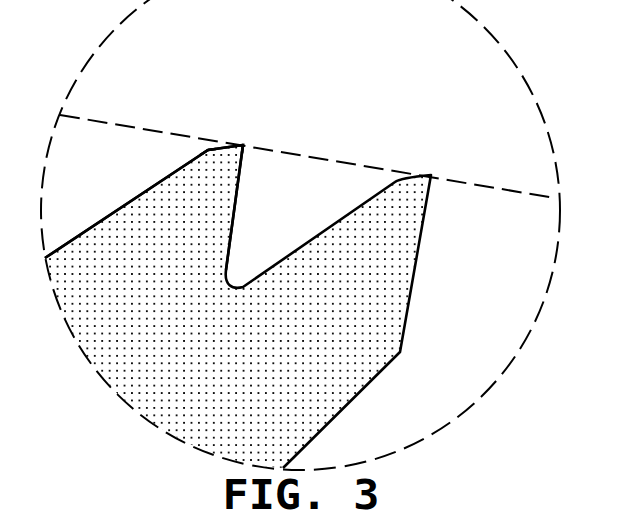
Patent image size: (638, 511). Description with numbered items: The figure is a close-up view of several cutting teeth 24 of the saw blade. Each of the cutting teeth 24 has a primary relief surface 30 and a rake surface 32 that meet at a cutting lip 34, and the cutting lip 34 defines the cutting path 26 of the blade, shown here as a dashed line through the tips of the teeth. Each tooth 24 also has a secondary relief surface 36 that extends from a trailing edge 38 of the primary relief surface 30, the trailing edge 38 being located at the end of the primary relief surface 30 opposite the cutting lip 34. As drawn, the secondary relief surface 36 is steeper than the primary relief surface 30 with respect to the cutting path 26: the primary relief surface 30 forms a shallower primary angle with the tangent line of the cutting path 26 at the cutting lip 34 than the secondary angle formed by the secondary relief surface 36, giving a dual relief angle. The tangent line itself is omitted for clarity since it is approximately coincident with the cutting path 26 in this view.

The cutting teeth 24 is at (181, 224).
The cutting path 26 is at (307, 156).
The primary relief surface 30 is at (223, 148).
The rake surface 32 is at (233, 220).
The cutting lip 34 is at (245, 144).
The secondary relief surface 36 is at (113, 216).
The trailing edge 38 is at (208, 150).